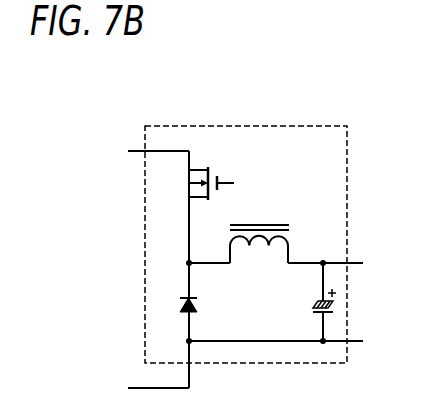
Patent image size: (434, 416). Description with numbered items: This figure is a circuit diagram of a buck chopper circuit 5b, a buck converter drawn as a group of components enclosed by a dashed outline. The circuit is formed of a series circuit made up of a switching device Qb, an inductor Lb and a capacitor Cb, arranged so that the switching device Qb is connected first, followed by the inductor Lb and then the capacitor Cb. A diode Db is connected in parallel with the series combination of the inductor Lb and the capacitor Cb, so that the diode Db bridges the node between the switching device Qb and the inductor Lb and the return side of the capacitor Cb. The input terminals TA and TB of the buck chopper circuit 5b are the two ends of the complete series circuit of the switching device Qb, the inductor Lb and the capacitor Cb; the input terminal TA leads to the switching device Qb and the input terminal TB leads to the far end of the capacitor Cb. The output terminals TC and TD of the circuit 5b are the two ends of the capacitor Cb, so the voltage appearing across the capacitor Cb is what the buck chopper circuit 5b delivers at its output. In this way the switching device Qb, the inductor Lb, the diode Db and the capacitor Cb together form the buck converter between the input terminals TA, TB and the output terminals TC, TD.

The buck chopper circuit 5b is at (283, 125).
The input terminal TA is at (140, 152).
The input terminal TB is at (140, 389).
The output terminal TC is at (360, 264).
The output terminal TD is at (360, 342).
The switching device Qb is at (228, 185).
The inductor Lb is at (259, 258).
The diode Db is at (204, 307).
The capacitor Cb is at (306, 307).